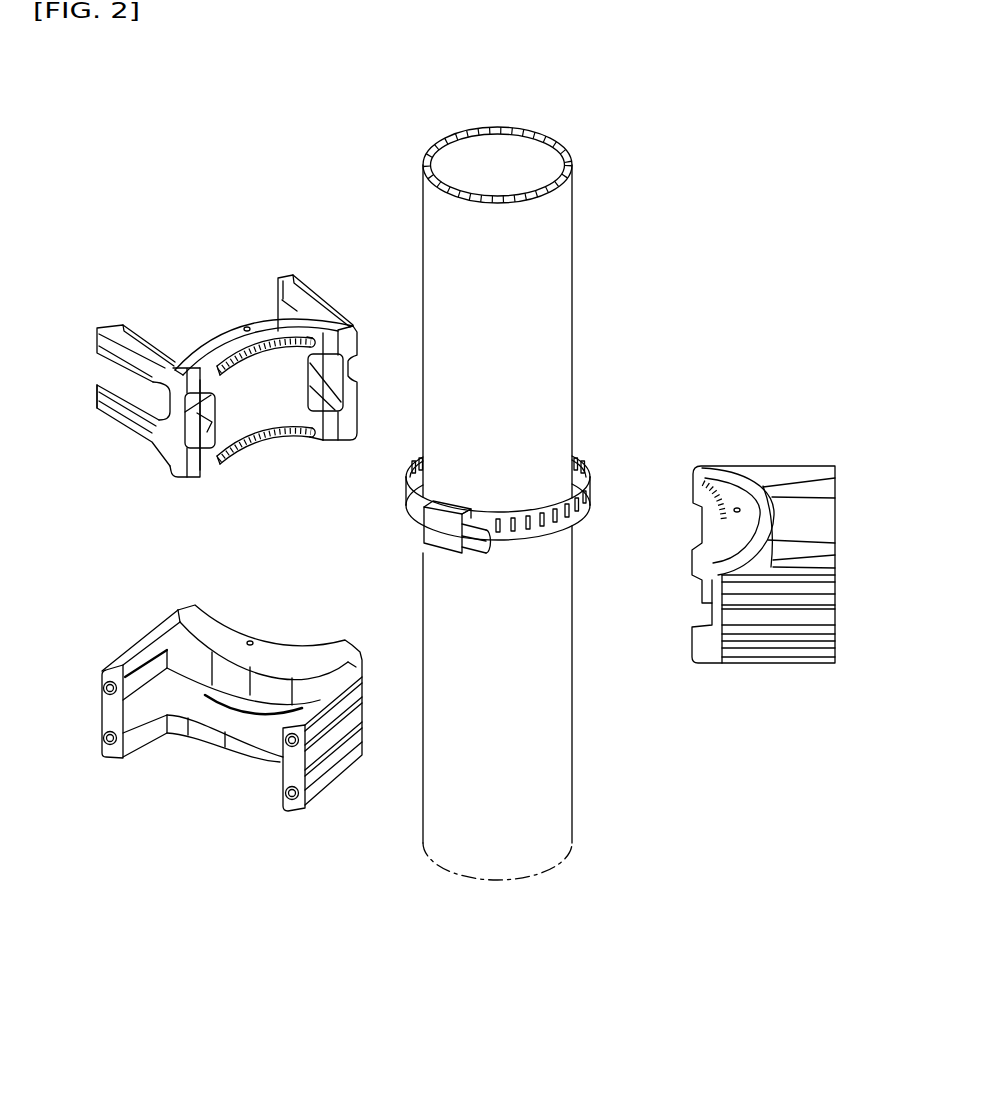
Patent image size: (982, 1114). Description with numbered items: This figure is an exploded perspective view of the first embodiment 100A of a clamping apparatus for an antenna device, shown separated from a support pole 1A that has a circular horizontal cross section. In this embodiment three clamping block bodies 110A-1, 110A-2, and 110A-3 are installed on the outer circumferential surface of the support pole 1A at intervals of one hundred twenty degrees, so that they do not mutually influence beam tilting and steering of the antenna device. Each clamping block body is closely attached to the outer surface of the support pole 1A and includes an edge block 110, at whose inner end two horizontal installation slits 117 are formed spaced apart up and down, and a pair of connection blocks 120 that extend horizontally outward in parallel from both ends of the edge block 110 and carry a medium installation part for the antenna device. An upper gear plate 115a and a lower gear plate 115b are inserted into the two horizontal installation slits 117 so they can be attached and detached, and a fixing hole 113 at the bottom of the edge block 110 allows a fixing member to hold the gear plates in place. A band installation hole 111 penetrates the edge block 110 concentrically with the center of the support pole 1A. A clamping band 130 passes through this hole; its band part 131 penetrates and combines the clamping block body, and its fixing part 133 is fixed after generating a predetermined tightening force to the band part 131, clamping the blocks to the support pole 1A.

The first embodiment 100A is at (216, 104).
The support pole 1A is at (558, 292).
The clamping block body 110A-1 is at (211, 383).
The clamping block body 110A-2 is at (210, 763).
The clamping block body 110A-3 is at (753, 672).
The edge block 110 is at (291, 366).
The band installation hole 111 is at (197, 413).
The fixing hole 113 is at (246, 326).
The upper gear plate 115a is at (272, 335).
The lower gear plate 115b is at (300, 437).
The horizontal installation slit 117 is at (308, 337).
The connection block 120 is at (120, 417).
The clamping band 130 is at (508, 533).
The band part 131 is at (588, 488).
The fixing part 133 is at (437, 542).